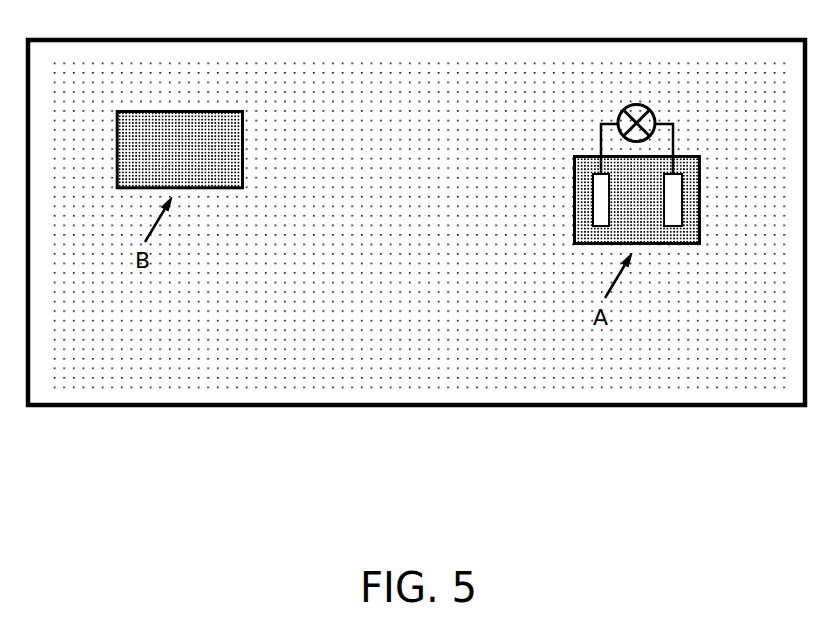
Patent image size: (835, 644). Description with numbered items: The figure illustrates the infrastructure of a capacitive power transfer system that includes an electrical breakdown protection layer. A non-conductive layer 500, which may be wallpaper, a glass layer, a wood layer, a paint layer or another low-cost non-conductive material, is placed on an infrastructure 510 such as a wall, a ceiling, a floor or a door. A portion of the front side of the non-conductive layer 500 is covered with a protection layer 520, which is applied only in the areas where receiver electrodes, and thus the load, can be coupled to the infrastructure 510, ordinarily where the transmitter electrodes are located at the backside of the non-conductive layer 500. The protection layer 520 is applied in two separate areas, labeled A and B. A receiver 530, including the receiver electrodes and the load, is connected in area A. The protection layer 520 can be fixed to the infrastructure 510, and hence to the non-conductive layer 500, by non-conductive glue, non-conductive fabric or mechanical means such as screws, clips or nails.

The non-conductive layer 500 is at (165, 380).
The infrastructure 510 is at (58, 407).
The protection layer 520 is at (243, 156).
The receiver 530 is at (647, 107).